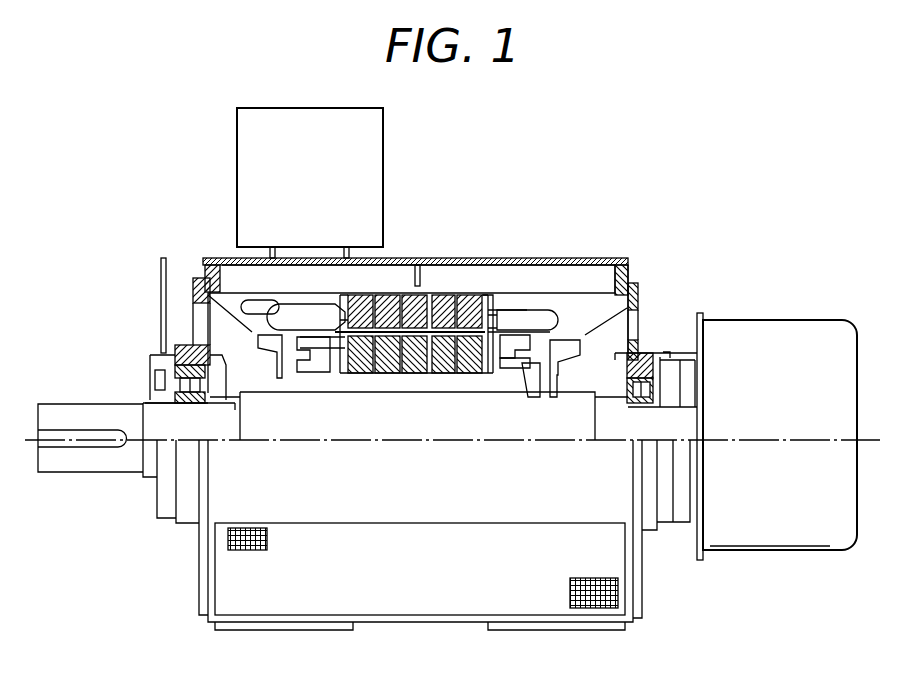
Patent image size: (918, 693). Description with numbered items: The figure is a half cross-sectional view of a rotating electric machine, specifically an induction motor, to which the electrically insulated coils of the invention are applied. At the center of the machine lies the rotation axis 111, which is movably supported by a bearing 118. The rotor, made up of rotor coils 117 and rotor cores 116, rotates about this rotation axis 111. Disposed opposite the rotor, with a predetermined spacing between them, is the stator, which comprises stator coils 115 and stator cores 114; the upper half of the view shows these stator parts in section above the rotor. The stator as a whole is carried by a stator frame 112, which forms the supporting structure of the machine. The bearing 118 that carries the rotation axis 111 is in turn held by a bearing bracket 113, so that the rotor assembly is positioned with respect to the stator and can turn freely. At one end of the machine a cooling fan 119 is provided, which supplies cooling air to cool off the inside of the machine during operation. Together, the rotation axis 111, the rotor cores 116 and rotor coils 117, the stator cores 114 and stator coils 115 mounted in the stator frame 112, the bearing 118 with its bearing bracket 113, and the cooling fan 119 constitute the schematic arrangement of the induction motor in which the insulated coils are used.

The rotation axis 111 is at (70, 403).
The stator frame 112 is at (217, 257).
The bearing bracket 113 is at (193, 283).
The stator cores 114 is at (470, 295).
The stator coils 115 is at (547, 307).
The rotor cores 116 is at (500, 318).
The rotor coils 117 is at (585, 338).
The bearing 118 is at (160, 350).
The cooling fan 119 is at (638, 315).